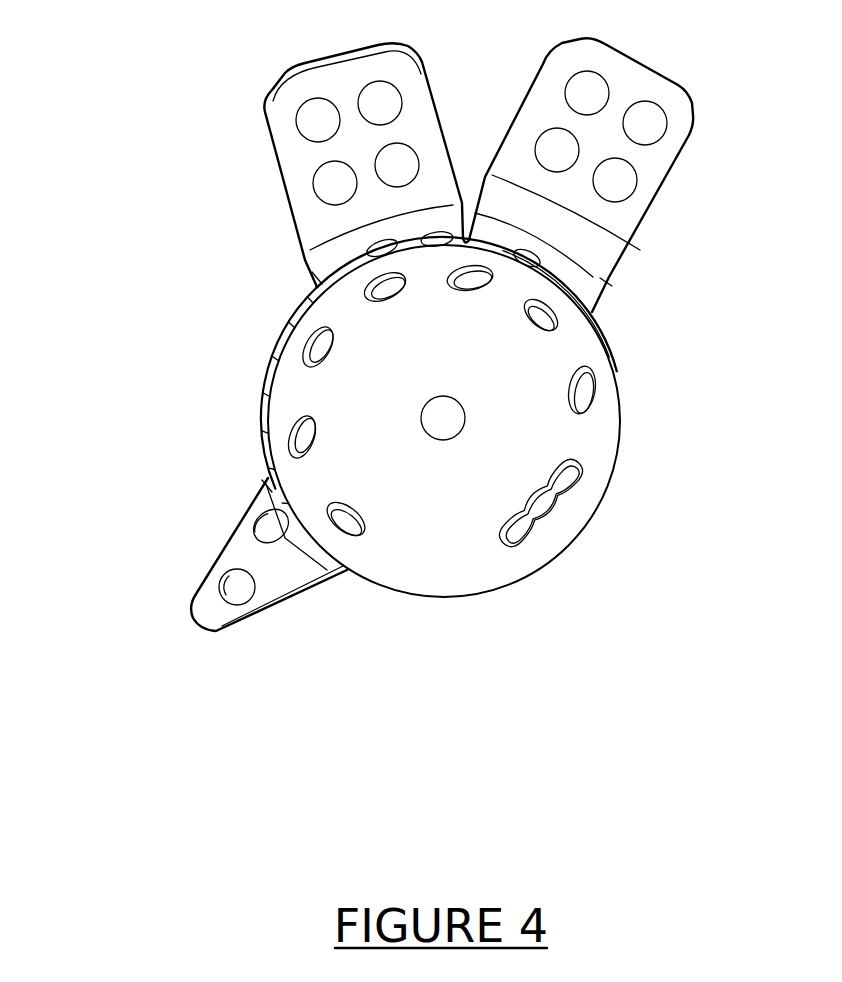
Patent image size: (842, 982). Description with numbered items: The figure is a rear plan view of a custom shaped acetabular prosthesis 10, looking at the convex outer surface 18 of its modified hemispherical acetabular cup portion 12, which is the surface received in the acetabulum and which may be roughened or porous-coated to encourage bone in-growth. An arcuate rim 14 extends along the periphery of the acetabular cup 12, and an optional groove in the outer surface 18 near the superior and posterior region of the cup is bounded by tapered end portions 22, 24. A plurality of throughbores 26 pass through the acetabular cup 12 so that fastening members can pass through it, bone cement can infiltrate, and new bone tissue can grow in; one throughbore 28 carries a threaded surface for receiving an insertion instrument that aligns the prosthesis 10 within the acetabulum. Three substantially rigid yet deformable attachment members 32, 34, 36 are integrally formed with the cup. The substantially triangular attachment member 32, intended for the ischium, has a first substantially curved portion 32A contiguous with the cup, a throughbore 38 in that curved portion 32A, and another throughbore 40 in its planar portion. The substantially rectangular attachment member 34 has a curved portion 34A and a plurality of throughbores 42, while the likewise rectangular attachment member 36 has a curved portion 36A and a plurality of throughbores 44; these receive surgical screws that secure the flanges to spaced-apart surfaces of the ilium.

The acetabular prosthesis 10 is at (115, 338).
The acetabular cup portion 12 is at (479, 604).
The rim 14 is at (620, 390).
The outer surface 18 is at (580, 432).
The tapered end portion 22 is at (612, 340).
The tapered end portion 24 is at (270, 357).
The throughbores 26 is at (318, 428).
The throughbore 28 is at (447, 442).
The attachment member 32 is at (178, 596).
The first substantially curved portion 32A is at (263, 483).
The attachment member 34 is at (256, 70).
The first substantially curved portion 34A is at (316, 270).
The attachment member 36 is at (707, 81).
The first substantially curved portion 36A is at (606, 283).
The throughbore 38 is at (257, 522).
The throughbore 40 is at (236, 602).
The throughbores 42 is at (380, 147).
The throughbores 44 is at (611, 158).